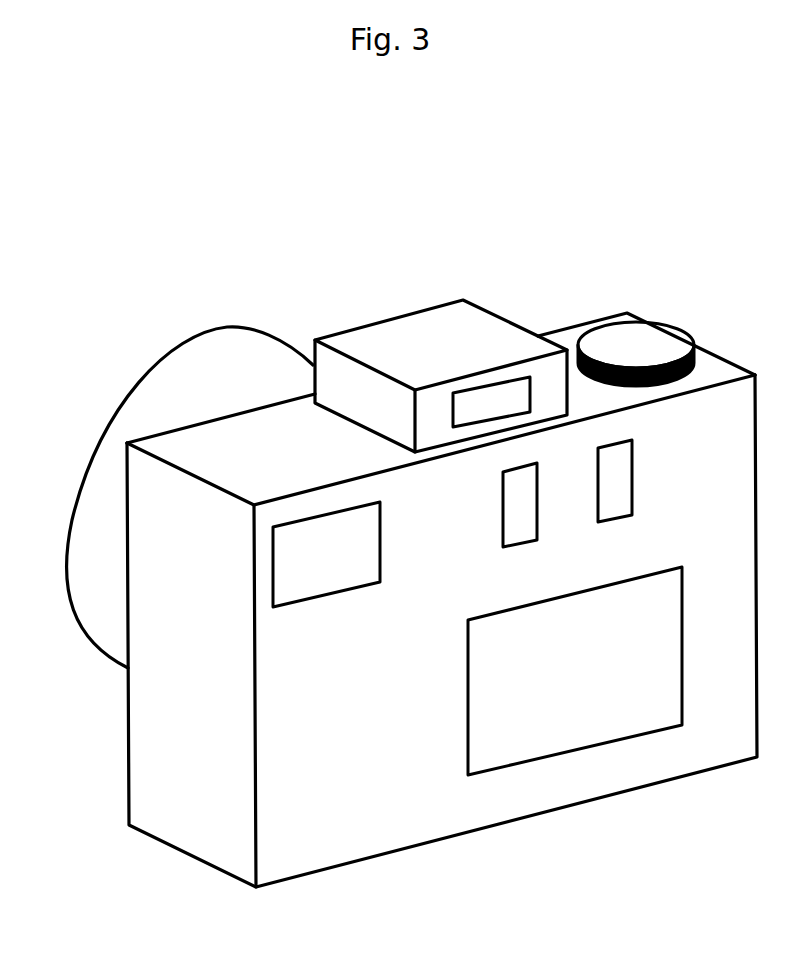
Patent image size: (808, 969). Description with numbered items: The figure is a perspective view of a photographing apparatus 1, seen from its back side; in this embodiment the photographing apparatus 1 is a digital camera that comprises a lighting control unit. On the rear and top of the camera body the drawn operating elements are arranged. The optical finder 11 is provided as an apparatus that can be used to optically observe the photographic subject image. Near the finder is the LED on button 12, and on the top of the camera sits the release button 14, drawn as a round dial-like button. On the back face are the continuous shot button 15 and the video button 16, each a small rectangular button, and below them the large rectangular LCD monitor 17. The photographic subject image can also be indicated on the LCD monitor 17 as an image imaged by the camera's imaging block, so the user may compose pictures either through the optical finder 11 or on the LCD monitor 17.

The photographing apparatus 1 is at (627, 313).
The optical finder 11 is at (380, 545).
The LED on button 12 is at (467, 393).
The release button 14 is at (670, 323).
The continuous shot button 15 is at (632, 475).
The video button 16 is at (538, 503).
The LCD monitor 17 is at (683, 587).